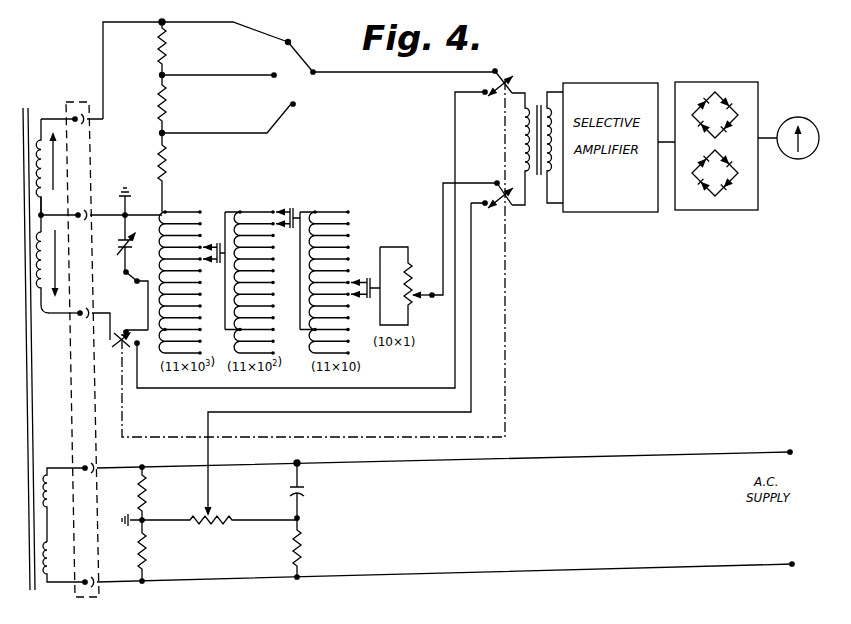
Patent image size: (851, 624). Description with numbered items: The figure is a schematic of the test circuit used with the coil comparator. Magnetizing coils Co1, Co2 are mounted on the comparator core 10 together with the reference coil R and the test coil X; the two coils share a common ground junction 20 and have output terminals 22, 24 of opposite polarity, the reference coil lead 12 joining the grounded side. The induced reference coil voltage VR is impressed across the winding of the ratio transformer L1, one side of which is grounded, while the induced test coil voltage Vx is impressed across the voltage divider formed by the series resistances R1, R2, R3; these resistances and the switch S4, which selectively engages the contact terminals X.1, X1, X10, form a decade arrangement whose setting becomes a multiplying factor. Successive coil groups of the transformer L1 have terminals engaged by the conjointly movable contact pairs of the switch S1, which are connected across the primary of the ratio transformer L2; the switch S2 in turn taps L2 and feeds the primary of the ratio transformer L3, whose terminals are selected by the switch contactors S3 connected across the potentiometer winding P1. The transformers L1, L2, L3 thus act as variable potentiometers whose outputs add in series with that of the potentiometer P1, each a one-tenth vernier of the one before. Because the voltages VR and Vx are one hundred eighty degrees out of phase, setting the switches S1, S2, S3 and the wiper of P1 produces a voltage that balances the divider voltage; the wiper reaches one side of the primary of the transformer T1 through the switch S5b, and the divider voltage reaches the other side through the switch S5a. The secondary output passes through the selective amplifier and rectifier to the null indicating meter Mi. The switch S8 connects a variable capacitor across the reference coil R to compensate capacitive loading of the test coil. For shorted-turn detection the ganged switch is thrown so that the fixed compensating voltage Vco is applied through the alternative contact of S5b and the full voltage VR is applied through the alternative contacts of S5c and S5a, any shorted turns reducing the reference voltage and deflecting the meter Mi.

The comparator core 10 is at (32, 392).
The terminal lead 12 is at (28, 208).
The common ground junction 20 is at (137, 201).
The output terminal 22 is at (79, 324).
The output terminal 24 is at (86, 117).
The test coil X is at (36, 205).
The reference coil R is at (41, 296).
The induced test coil voltage Vx is at (61, 161).
The induced reference coil voltage VR is at (63, 263).
The series resistance R1 is at (174, 48).
The series resistance R2 is at (174, 103).
The series resistance R3 is at (174, 172).
The contact terminal X1 is at (219, 67).
The contact terminal X10 is at (228, 115).
The contact terminal X.1 is at (290, 32).
The switch S4 is at (308, 53).
The ratio transformer L1 is at (175, 207).
The ratio transformer L2 is at (248, 208).
The ratio transformer L3 is at (323, 208).
The switch S1 is at (212, 264).
The switch S2 is at (286, 230).
The switch contactors S3 is at (367, 296).
The potentiometer winding P1 is at (415, 255).
The switch S8 is at (128, 294).
The switch section S5a is at (516, 81).
The switch section S5b is at (511, 209).
The switch section S5c is at (109, 357).
The transformer T1 is at (538, 100).
The null indicating meter Mi is at (796, 118).
The magnetizing coil Co1 is at (58, 473).
The magnetizing coil Co2 is at (56, 572).
The fixed compensating voltage Vco is at (180, 513).